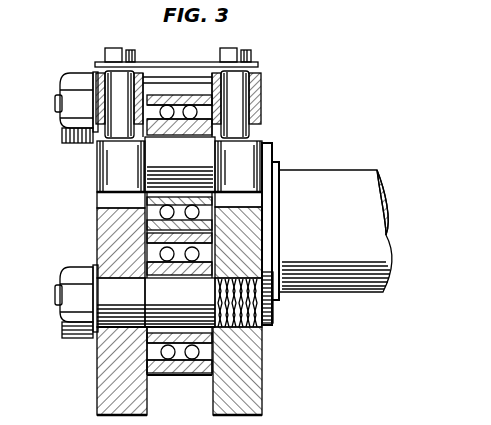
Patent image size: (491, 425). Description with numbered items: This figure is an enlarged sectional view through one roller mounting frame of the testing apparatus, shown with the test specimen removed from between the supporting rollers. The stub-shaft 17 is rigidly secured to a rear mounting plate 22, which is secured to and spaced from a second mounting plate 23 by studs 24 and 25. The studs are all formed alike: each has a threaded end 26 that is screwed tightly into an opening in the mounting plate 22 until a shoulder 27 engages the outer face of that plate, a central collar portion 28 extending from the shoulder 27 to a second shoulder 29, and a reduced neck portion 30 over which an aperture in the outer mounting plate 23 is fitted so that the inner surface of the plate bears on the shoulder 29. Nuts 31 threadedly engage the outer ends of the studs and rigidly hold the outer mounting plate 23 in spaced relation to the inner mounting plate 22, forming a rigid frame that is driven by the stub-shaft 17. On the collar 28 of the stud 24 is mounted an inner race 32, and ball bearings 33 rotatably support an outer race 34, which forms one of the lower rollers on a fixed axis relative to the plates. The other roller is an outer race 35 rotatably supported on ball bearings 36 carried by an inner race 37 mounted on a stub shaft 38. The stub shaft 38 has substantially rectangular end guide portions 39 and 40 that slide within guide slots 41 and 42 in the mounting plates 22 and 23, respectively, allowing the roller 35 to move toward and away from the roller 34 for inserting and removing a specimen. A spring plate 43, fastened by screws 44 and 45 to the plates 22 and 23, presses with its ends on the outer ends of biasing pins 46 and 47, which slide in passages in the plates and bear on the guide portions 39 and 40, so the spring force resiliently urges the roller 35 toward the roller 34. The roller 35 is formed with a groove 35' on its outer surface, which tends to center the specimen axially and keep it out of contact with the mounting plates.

The stub-shaft 17 is at (322, 175).
The rear mounting plate 22 is at (253, 343).
The second mounting plate 23 is at (115, 380).
The stud 24 is at (57, 305).
The stud 25 is at (55, 107).
The threaded end 26 is at (275, 313).
The shoulder 27 is at (232, 275).
The central collar portion 28 is at (146, 298).
The second shoulder 29 is at (145, 311).
The reduced neck portion 30 is at (115, 335).
The nut 31 is at (75, 141).
The inner race 32 is at (210, 342).
The ball bearings 33 is at (192, 362).
The outer race 34 is at (167, 373).
The outer race 35 is at (181, 88).
The groove 35' is at (179, 85).
The ball bearings 36 is at (147, 209).
The inner race 37 is at (212, 200).
The stub shaft 38 is at (158, 163).
The end guide portion 39 is at (264, 141).
The end guide portion 40 is at (107, 167).
The guide slot 41 is at (262, 125).
The guide slot 42 is at (100, 215).
The spring plate 43 is at (165, 62).
The screw 44 is at (247, 52).
The screw 45 is at (110, 50).
The biasing pin 46 is at (260, 82).
The biasing pin 47 is at (118, 87).